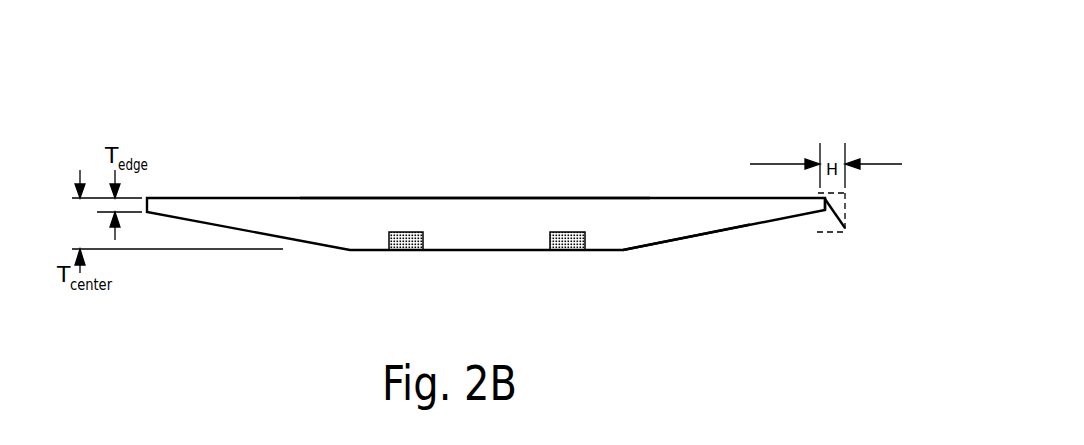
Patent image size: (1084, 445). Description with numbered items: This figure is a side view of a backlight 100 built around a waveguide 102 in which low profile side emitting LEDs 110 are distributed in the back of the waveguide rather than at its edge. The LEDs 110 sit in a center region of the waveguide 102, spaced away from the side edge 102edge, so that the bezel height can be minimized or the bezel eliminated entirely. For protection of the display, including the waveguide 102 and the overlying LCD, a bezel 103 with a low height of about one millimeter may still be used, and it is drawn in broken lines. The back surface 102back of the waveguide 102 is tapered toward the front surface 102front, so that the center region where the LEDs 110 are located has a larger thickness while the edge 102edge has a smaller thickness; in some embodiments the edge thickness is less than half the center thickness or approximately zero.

The backlight 100 is at (197, 130).
The waveguide 102 is at (630, 207).
The front surface 102front is at (470, 198).
The back surface 102back is at (663, 243).
The edge 102edge is at (845, 229).
The bezel 103 is at (845, 219).
The side emitting LEDs 110 is at (423, 232).